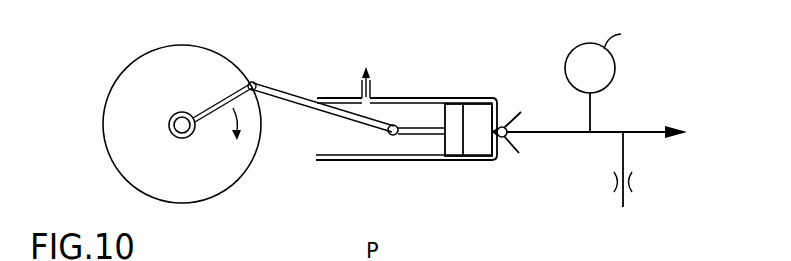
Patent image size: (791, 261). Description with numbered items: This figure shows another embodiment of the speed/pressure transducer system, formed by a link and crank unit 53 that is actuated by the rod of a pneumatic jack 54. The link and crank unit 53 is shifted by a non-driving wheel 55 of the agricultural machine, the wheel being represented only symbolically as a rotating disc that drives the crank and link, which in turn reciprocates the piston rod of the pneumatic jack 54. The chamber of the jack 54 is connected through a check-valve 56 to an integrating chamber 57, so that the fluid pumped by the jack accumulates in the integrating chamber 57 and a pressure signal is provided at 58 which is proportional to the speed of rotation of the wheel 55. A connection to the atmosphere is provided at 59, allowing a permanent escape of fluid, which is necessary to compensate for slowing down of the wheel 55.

The link and crank unit 53 is at (284, 94).
The pneumatic jack 54 is at (438, 158).
The non-driving wheel 55 is at (246, 148).
The check-valve 56 is at (519, 153).
The integrating chamber 57 is at (638, 79).
The pressure signal output 58 is at (597, 116).
The connection to the atmosphere 59 is at (636, 182).